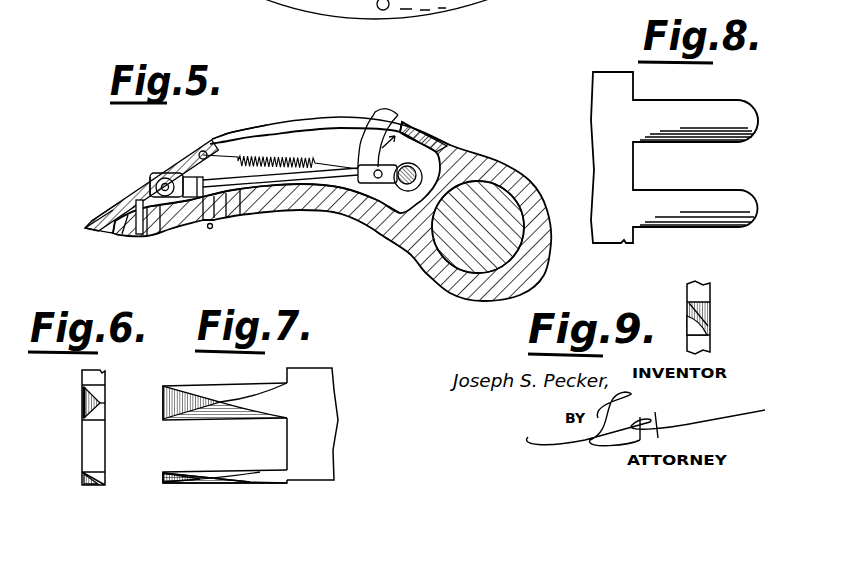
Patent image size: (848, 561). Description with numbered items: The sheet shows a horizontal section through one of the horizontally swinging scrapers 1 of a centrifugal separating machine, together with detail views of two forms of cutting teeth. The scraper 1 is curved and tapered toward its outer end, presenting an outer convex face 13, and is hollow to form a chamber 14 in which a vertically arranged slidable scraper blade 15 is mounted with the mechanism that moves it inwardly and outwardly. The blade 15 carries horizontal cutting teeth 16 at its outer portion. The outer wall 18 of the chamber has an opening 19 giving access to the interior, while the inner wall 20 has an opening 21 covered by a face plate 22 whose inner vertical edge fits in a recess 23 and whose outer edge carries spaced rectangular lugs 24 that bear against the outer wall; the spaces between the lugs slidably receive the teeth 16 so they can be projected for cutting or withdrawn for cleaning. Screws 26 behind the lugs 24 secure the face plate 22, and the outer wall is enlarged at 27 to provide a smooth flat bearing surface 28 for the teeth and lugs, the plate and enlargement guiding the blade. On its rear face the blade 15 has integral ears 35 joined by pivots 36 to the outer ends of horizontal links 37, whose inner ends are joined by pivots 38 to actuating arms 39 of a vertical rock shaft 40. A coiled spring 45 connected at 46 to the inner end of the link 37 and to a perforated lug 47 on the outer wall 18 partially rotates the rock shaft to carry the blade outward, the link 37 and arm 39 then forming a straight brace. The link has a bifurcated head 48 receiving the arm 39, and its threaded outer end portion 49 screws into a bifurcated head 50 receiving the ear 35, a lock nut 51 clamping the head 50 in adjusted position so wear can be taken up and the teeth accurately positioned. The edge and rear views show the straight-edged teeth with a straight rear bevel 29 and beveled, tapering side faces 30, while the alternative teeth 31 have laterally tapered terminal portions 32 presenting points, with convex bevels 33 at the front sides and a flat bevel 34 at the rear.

In FIG. 5, the scraper 1 is at (375, 226).
In FIG. 5, the convex face 13 is at (400, 127).
In FIG. 5, the chamber 14 is at (328, 138).
In FIG. 5, the scraper blade 15 is at (167, 228).
In FIG. 5, the cutting teeth 16 is at (96, 233).
In FIG. 5, the outer wall 18 is at (140, 172).
In FIG. 5, the opening 19 is at (317, 119).
In FIG. 5, the inner wall 20 is at (330, 212).
In FIG. 5, the opening 21 is at (207, 210).
In FIG. 5, the face plate 22 is at (157, 237).
In FIG. 5, the recess 23 is at (227, 214).
In FIG. 5, the lugs 24 is at (118, 234).
In FIG. 5, the bolts or screws 26 is at (141, 232).
In FIG. 5, the enlargement 27 is at (126, 190).
In FIG. 5, the bearing surface 28 is at (112, 206).
In FIG. 6, the straight bevel 29 is at (82, 414).
In FIG. 7, the straight bevel 29 is at (177, 393).
In FIG. 6, the side faces 30 is at (103, 407).
In FIG. 7, the side faces 30 is at (248, 372).
In FIG. 8, the cutting teeth 31 is at (690, 102).
In FIG. 8, the terminal portions 32 is at (740, 104).
In FIG. 9, the convex bevels 33 is at (688, 303).
In FIG. 9, the flat bevel 34 is at (712, 313).
In FIG. 5, the ears 35 is at (163, 172).
In FIG. 5, the pivot 36 is at (172, 177).
In FIG. 5, the link 37 is at (236, 178).
In FIG. 5, the pivot 38 is at (405, 165).
In FIG. 5, the actuating arm 39 is at (382, 170).
In FIG. 5, the rock shaft 40 is at (452, 145).
In FIG. 5, the coiled spring 45 is at (285, 157).
In FIG. 5, the connection point 46 is at (368, 140).
In FIG. 5, the perforated lug or ear 47 is at (223, 140).
In FIG. 5, the head 48 is at (388, 120).
In FIG. 5, the outer end portion 49 is at (247, 214).
In FIG. 5, the head 50 is at (203, 151).
In FIG. 5, the lock nut 51 is at (210, 233).